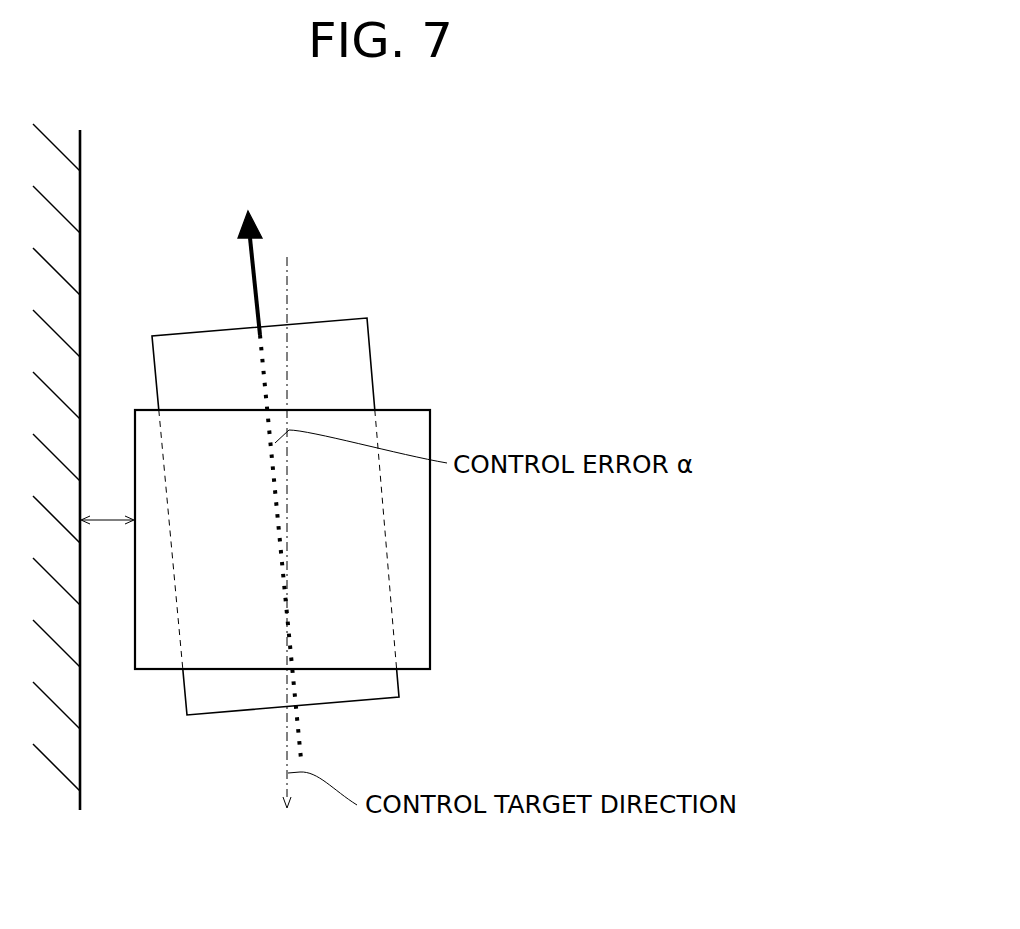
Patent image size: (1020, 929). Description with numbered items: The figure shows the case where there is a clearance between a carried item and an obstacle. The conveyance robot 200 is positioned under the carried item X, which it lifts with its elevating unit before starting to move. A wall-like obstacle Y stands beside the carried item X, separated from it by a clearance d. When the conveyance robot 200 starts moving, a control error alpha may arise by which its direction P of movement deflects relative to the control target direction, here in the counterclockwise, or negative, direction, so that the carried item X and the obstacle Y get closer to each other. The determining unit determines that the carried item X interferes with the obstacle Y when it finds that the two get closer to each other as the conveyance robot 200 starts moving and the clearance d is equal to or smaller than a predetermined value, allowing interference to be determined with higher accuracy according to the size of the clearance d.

The conveyance robot 200 is at (348, 361).
The obstacle Y is at (84, 178).
The carried item X is at (431, 578).
The clearance d is at (107, 503).
The direction of movement P is at (269, 472).